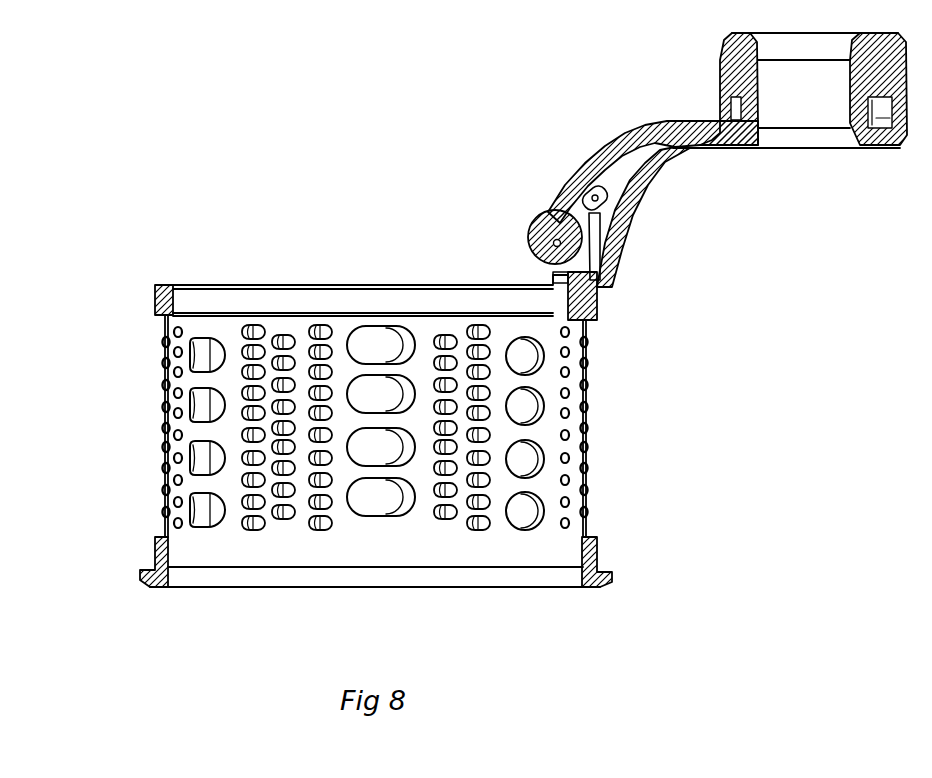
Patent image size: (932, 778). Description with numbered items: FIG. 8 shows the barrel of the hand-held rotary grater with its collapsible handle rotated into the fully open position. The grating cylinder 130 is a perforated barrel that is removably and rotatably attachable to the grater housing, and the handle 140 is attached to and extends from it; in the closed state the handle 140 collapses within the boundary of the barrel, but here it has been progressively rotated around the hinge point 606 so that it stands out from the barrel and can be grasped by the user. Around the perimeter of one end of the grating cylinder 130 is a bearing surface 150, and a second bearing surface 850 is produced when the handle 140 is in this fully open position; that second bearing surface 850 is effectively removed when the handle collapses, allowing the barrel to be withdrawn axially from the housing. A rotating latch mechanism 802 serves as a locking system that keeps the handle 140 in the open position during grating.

The grating cylinder 130 is at (690, 441).
The bearing surface 150 is at (600, 570).
The rotating latch mechanism 802 is at (552, 195).
The second bearing surface 850 is at (610, 290).
The hinge point 606 is at (553, 244).
The handle 140 is at (885, 138).